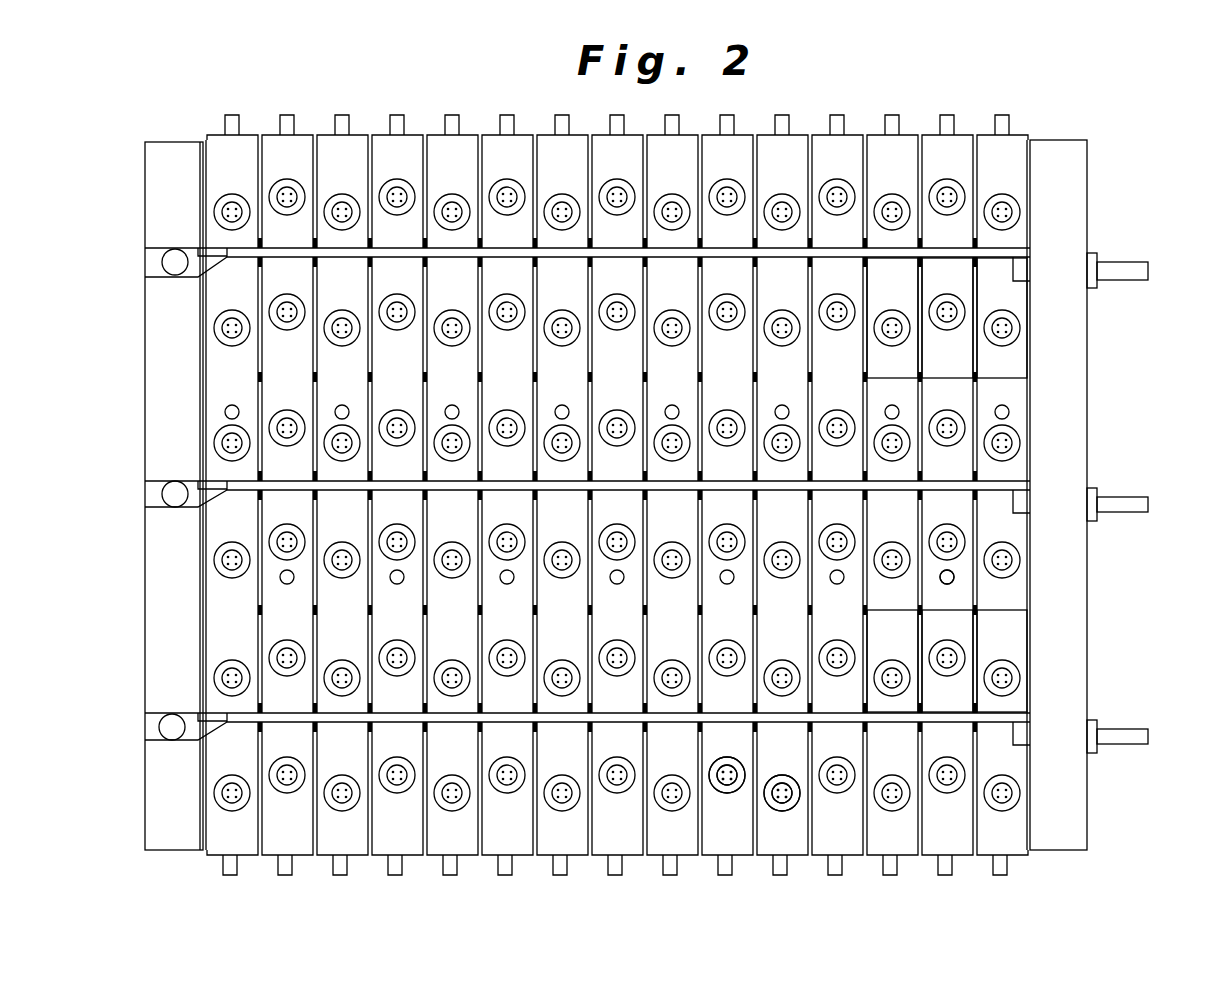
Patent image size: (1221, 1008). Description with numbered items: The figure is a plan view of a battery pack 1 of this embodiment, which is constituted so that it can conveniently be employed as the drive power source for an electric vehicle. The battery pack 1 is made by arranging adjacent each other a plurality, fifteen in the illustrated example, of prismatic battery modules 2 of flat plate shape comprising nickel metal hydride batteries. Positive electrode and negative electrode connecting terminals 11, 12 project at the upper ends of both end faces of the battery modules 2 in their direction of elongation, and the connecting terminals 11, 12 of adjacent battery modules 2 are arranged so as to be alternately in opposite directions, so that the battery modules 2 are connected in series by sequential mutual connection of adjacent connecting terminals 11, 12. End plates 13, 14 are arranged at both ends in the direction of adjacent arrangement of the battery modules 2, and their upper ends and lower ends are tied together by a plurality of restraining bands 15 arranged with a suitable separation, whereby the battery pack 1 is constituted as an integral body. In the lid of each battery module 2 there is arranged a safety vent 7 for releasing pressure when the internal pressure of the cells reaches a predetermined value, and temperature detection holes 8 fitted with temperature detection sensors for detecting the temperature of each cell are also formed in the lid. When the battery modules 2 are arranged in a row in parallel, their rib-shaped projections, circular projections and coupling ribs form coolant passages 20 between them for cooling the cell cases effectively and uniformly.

The battery pack 1 is at (1122, 210).
The battery module 2 is at (1008, 383).
The safety vent 7 is at (778, 796).
The temperature detection hole 8 is at (956, 577).
The positive electrode connecting terminal 11 is at (287, 125).
The negative electrode connecting terminal 12 is at (235, 127).
The end plate 13 is at (1063, 418).
The end plate 14 is at (160, 558).
The restraining band 15 is at (247, 252).
The coolant passage 20 is at (978, 647).